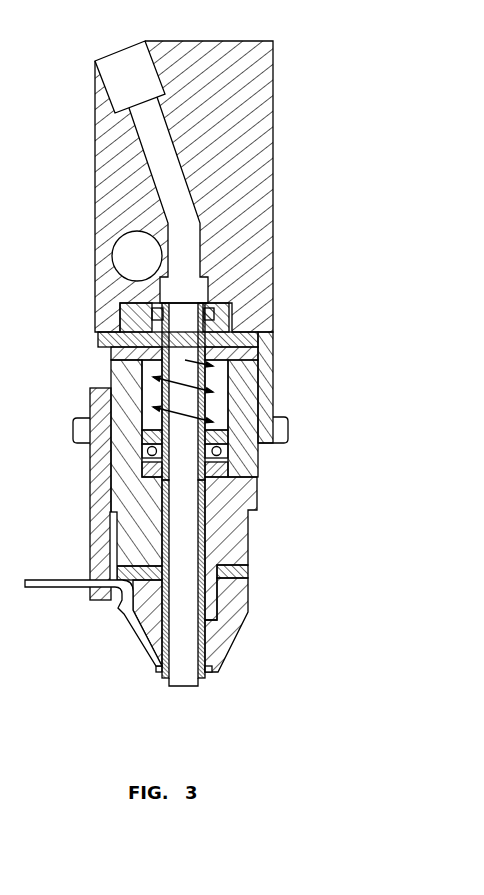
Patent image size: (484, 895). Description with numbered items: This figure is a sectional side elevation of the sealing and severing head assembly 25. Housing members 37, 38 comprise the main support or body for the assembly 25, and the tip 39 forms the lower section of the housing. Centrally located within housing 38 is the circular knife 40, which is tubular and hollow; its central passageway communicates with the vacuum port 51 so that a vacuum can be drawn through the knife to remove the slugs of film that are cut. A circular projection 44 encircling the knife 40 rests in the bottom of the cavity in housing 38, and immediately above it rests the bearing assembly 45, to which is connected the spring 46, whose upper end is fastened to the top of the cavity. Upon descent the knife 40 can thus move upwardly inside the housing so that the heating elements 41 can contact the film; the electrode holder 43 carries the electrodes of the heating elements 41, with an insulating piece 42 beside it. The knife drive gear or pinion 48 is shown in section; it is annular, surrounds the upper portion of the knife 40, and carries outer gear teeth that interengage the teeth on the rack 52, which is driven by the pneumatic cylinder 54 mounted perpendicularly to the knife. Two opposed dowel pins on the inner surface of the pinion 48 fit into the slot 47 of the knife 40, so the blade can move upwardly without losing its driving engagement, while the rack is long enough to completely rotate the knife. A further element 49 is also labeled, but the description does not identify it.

The sealing and severing head assembly 25 is at (333, 271).
The housing member 37 is at (275, 140).
The housing member 38 is at (260, 497).
The tip 39 is at (249, 628).
The circular knife 40 is at (203, 686).
The heating elements 41 is at (52, 580).
The insulating piece 42 is at (118, 560).
The electrode holder 43 is at (88, 462).
The circular projection 44 is at (228, 470).
The bearing assembly 45 is at (228, 428).
The spring 46 is at (150, 392).
The slot 47 is at (226, 340).
The knife drive gear or pinion 48 is at (214, 303).
The fluid passage 49 is at (273, 243).
The vacuum port 51 is at (124, 41).
The rack 52 is at (120, 314).
The pneumatic cylinder 54 is at (98, 252).